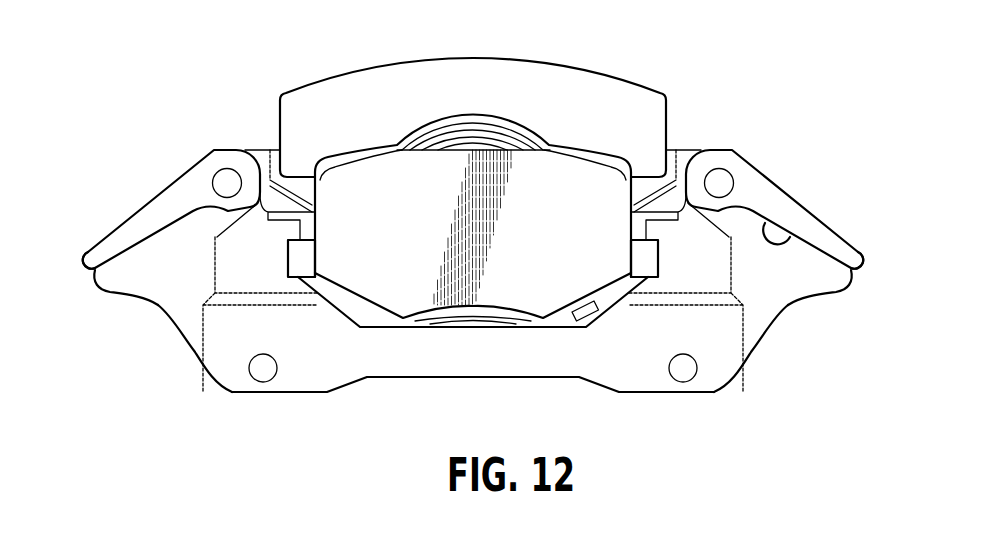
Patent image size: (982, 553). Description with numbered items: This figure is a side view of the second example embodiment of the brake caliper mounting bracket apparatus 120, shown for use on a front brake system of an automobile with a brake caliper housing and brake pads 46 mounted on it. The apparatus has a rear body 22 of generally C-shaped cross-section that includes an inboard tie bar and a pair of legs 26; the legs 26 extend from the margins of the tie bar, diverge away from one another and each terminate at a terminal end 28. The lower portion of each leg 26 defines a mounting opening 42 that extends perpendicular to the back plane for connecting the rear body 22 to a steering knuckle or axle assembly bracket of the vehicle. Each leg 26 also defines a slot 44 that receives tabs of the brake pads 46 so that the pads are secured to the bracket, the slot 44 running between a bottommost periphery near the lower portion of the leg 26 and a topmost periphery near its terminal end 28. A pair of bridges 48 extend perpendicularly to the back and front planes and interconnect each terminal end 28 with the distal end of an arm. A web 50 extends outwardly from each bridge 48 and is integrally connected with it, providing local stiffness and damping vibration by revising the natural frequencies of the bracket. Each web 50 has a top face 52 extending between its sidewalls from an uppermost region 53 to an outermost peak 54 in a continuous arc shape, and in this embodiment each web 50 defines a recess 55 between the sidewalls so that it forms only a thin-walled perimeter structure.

The brake caliper mounting bracket apparatus 120 is at (798, 105).
The rear body 22 is at (389, 381).
The legs 26 is at (185, 325).
The terminal end 28 is at (138, 275).
The mounting openings 42 is at (257, 359).
The slot 44 is at (293, 257).
The brake pads 46 is at (571, 176).
The bridges 48 is at (223, 160).
The webs 50 is at (477, 195).
The top face 52 is at (175, 175).
The uppermost region 53 is at (223, 150).
The outermost peak 54 is at (89, 261).
The recess 55 is at (188, 222).